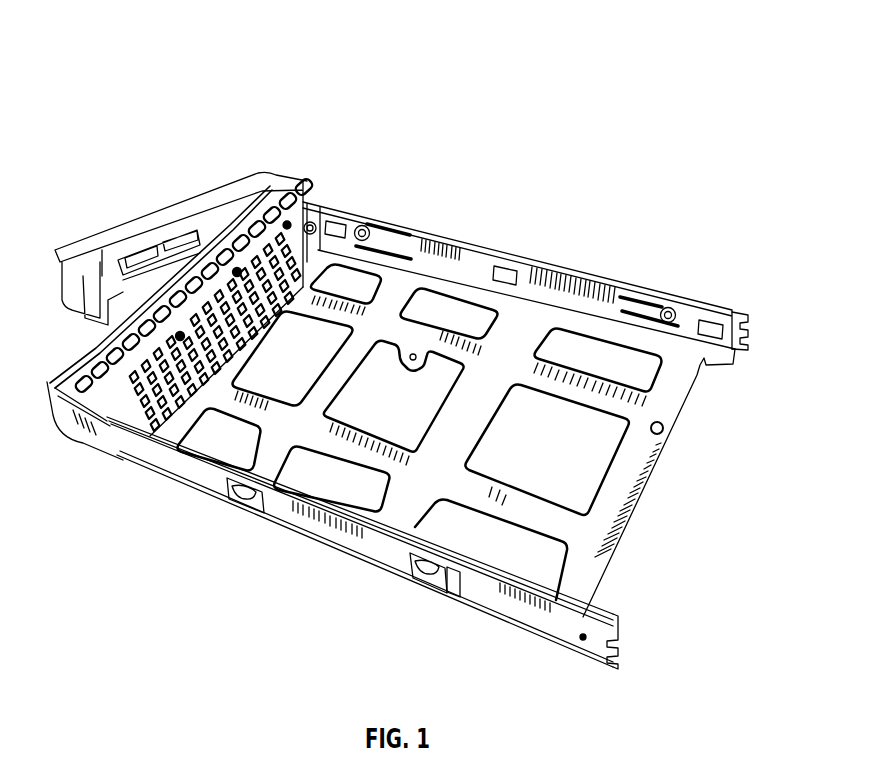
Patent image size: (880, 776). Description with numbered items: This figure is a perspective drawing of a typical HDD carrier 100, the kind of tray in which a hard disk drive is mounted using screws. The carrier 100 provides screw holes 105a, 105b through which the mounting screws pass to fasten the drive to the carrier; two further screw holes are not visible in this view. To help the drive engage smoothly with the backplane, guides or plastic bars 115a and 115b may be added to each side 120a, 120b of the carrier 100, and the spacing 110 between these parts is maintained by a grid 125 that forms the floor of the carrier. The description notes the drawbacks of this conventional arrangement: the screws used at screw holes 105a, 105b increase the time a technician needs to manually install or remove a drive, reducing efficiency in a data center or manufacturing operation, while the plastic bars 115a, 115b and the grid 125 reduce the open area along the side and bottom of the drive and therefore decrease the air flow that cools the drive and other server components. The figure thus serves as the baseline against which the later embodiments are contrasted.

The HDD carrier 100 is at (180, 61).
The spacing 110 is at (737, 367).
The screw hole 105a is at (365, 233).
The screw hole 105b is at (670, 312).
The plastic bar 115a is at (570, 632).
The plastic bar 115b is at (737, 310).
The side 120a is at (487, 267).
The side 120b is at (498, 578).
The grid 125 is at (545, 353).